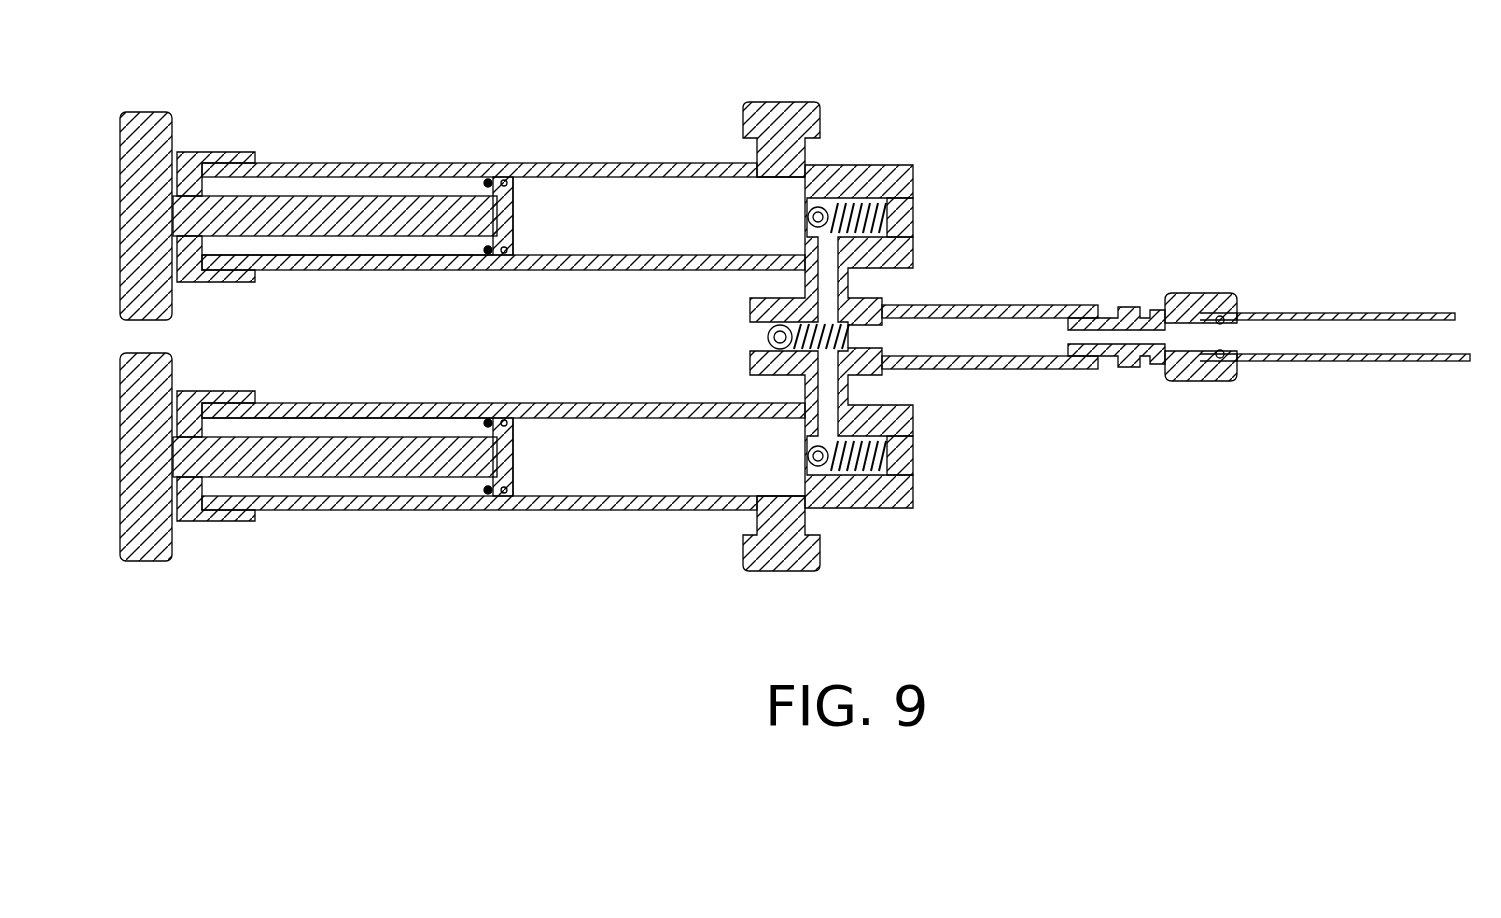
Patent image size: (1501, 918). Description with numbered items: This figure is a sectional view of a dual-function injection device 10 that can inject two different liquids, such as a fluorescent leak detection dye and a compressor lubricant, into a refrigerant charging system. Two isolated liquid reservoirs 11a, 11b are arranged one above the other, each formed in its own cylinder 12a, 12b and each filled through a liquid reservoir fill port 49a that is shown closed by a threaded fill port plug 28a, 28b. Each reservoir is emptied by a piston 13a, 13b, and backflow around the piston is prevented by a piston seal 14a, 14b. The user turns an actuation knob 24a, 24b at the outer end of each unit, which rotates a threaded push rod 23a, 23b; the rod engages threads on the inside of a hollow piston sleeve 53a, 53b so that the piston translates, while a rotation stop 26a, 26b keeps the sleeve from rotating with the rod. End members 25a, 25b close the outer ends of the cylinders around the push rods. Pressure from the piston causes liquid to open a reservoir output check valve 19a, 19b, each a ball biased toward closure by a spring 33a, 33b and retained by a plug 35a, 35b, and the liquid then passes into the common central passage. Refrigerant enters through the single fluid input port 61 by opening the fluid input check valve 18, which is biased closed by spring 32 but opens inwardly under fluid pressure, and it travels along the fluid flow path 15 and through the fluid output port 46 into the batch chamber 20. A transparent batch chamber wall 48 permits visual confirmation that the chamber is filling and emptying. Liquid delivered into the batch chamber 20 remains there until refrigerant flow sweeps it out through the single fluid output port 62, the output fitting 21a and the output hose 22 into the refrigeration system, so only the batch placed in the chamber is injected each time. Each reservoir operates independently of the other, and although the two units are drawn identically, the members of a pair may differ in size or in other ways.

The injection device 10 is at (1150, 88).
The liquid reservoir 11a is at (597, 200).
The liquid reservoir 11b is at (597, 473).
The cylinder 12a is at (650, 166).
The cylinder 12b is at (652, 510).
The piston 13a is at (512, 210).
The piston 13b is at (515, 465).
The piston seal 14a is at (501, 178).
The piston seal 14b is at (501, 423).
The fluid flow path 15 is at (862, 333).
The fluid input check valve 18 is at (783, 345).
The reservoir output check valve 19a is at (818, 212).
The reservoir output check valve 19b is at (818, 462).
The batch chamber 20 is at (985, 318).
The output fitting 21a is at (1126, 306).
The output hose 22 is at (1365, 362).
The threaded push rod 23a is at (333, 213).
The threaded push rod 23b is at (293, 462).
The actuation knob 24a is at (145, 130).
The actuation knob 24b is at (145, 542).
The end cap 25a is at (187, 157).
The end cap 25b is at (187, 512).
The rotation stop 26a is at (486, 180).
The rotation stop 26b is at (487, 495).
The fill port plug 28a is at (780, 106).
The fill port plug 28b is at (780, 570).
The spring 32 is at (800, 325).
The spring 33a is at (862, 200).
The spring 33b is at (862, 475).
The plug 35a is at (905, 218).
The plug 35b is at (905, 458).
The fluid output port 46 is at (878, 338).
The transparent batch chamber wall 48 is at (1042, 320).
The liquid reservoir fill port 49a is at (777, 182).
The hollow piston sleeve 53a is at (367, 242).
The hollow piston sleeve 53b is at (370, 482).
The fluid input port 61 is at (755, 337).
The fluid output port 62 is at (1218, 337).